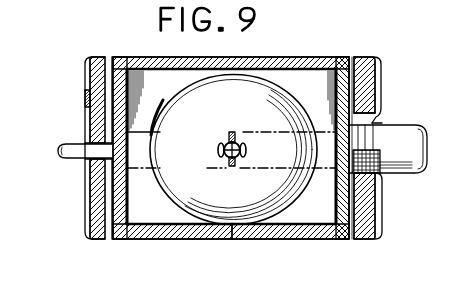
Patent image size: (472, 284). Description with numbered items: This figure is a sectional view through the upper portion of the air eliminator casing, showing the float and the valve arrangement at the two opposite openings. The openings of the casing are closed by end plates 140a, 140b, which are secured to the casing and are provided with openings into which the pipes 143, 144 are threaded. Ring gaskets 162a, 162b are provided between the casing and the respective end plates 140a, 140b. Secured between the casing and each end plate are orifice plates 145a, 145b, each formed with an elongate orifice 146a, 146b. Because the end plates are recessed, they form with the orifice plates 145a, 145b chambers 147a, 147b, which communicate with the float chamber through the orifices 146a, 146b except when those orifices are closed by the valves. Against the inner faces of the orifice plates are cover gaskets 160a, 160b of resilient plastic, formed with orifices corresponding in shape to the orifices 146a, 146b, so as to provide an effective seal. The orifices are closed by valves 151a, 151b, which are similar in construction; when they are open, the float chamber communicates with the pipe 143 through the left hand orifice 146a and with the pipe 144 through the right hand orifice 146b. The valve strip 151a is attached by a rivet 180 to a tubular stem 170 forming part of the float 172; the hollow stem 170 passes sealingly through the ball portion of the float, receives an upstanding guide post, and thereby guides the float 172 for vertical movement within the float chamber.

The end plate 140a is at (68, 148).
The end plate 140b is at (395, 148).
The pipe 143 is at (62, 156).
The pipe 144 is at (399, 165).
The orifice plate 145a is at (158, 246).
The orifice plate 145b is at (291, 246).
The elongate orifice 146a is at (75, 140).
The elongate orifice 146b is at (390, 138).
The chamber 147a is at (77, 199).
The chamber 147b is at (369, 133).
The valve 151a is at (196, 152).
The valve 151b is at (263, 152).
The cover gasket 160a is at (147, 148).
The cover gasket 160b is at (320, 148).
The ring gasket 162a is at (87, 86).
The ring gasket 162b is at (377, 160).
The tubular stem 170 is at (206, 139).
The float 172 is at (233, 150).
The rivet 180 is at (249, 135).